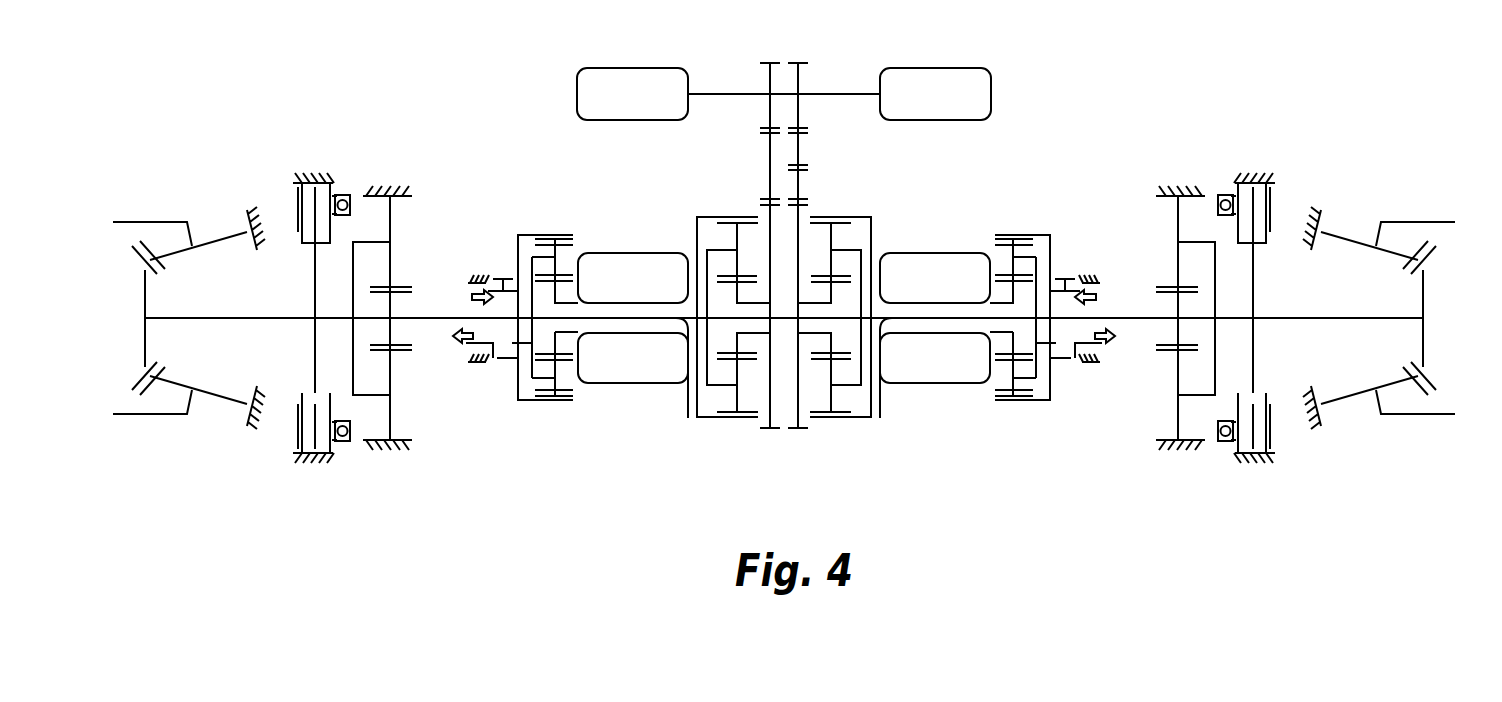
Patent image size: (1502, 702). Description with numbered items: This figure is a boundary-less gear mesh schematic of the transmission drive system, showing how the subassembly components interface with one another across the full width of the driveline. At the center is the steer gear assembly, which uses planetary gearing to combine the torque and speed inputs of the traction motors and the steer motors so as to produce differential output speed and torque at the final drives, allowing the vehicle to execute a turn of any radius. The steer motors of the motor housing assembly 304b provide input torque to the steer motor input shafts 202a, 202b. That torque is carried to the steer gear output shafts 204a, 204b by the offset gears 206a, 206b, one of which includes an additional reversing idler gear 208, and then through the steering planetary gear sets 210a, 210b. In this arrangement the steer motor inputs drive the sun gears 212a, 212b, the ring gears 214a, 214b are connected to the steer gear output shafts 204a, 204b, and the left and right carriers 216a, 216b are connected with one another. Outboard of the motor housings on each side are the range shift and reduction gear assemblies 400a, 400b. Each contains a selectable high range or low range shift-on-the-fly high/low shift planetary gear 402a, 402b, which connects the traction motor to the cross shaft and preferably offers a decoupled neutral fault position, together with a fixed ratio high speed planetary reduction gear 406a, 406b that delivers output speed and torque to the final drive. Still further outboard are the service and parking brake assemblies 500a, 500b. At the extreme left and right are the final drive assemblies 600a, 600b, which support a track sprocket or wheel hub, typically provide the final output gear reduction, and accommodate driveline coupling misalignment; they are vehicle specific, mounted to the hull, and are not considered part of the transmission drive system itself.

The steer motor input shaft 202a is at (723, 93).
The steer motor input shaft 202b is at (845, 93).
The steer gear output shaft 204a is at (688, 418).
The steer gear output shaft 204b is at (880, 418).
The offset gear 206a is at (745, 137).
The offset gear 206b is at (817, 133).
The reversing idler gear 208 is at (800, 183).
The steering planetary gear set 210a is at (725, 425).
The steering planetary gear set 210b is at (843, 425).
The sun gear 212a is at (770, 256).
The sun gear 212b is at (798, 256).
The ring gear 214a is at (747, 422).
The ring gear 214b is at (822, 422).
The carrier 216a is at (737, 402).
The carrier 216b is at (831, 402).
The Motor Housing Assembly 304b is at (643, 68).
The Range Shift & Reduction Gear assembly 400a is at (495, 253).
The Range Shift & Reduction Gear assembly 400b is at (1071, 240).
The High/Low Shift planetary gear 402a is at (560, 213).
The High/Low Shift planetary gear 402b is at (1020, 221).
The High Speed Planetary reduction gear 406a is at (384, 170).
The High Speed Planetary reduction gear 406b is at (1179, 170).
The Service/Parking Brake assembly 500a is at (309, 155).
The Service/Parking Brake assembly 500b is at (1256, 155).
The Final Drive Assembly 600a is at (222, 207).
The Final Drive Assembly 600b is at (1345, 207).